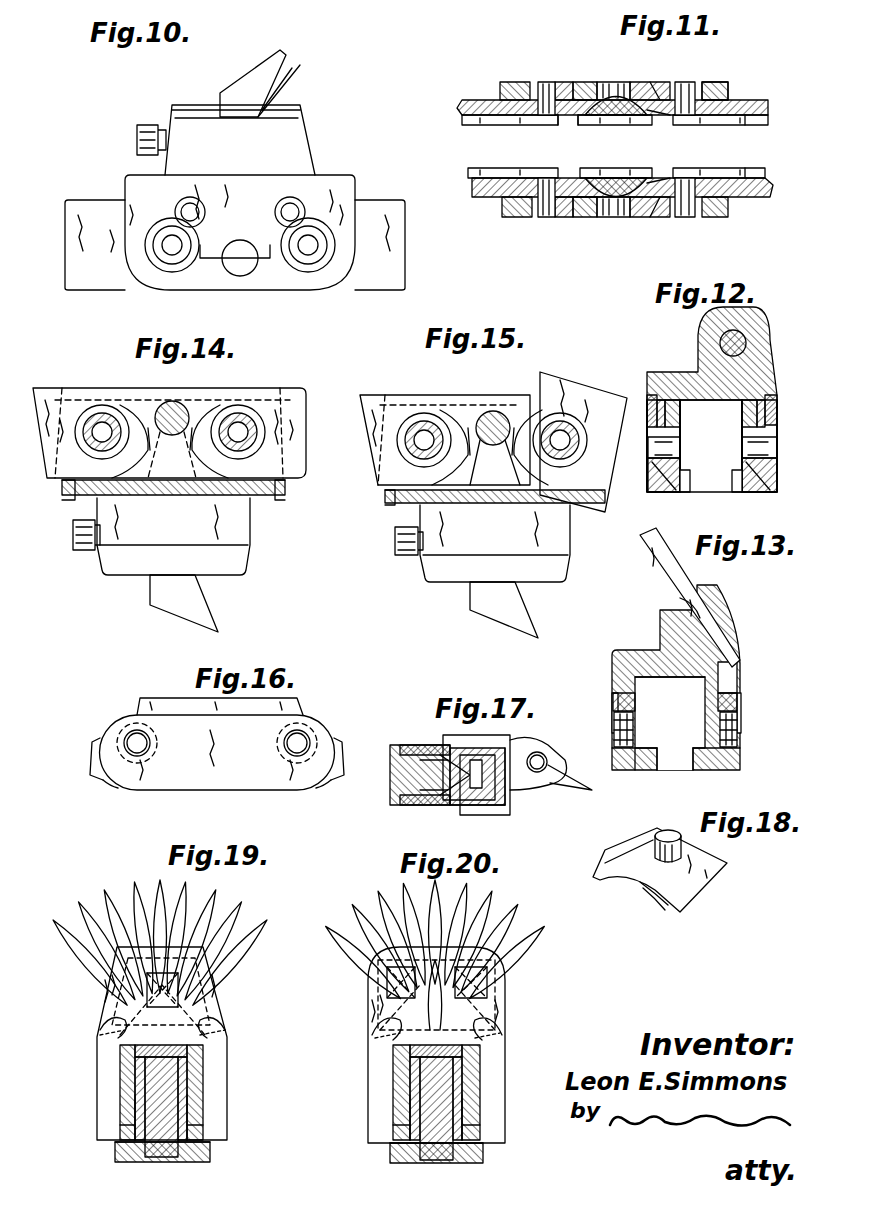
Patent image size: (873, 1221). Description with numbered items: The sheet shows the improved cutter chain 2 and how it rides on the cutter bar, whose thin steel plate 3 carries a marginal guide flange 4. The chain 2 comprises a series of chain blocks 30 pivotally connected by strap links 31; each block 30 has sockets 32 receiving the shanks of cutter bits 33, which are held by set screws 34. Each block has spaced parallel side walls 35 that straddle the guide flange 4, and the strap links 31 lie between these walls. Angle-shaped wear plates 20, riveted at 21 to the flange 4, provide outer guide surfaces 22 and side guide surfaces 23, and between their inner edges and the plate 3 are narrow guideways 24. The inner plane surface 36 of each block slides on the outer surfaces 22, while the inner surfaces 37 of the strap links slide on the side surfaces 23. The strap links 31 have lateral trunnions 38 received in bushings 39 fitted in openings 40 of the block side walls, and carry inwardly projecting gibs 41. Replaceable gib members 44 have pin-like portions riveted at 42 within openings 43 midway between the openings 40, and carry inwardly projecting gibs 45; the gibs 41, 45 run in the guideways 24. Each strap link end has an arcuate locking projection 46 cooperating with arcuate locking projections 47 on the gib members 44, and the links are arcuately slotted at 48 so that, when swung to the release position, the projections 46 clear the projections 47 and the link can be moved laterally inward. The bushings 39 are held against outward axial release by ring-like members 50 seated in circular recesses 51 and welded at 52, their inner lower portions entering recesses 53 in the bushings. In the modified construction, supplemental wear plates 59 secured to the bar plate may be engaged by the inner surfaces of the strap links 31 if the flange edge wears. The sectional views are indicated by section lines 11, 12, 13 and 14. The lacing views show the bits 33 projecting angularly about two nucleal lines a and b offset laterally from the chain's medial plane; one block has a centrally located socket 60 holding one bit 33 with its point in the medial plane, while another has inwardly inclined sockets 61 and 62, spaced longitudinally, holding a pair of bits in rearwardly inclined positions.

In FIG. 10, the cutter chain 2 is at (364, 171).
In FIG. 17, the cutter bar plate 3 is at (392, 770).
In FIG. 19, the cutter bar plate 3 is at (210, 1157).
In FIG. 20, the cutter bar plate 3 is at (483, 1157).
In FIG. 19, the guide flange 4 is at (180, 1087).
In FIG. 20, the guide flange 4 is at (450, 1087).
In FIG. 10, the hanger 11 is at (425, 245).
In FIG. 10, the longitudinal guideways 12 is at (180, 322).
In FIG. 10, the lateral guides 13 is at (232, 324).
In FIG. 11, the adjusting screw 14 is at (798, 100).
In FIG. 17, the wear plates 20 is at (470, 805).
In FIG. 19, the wear plates 20 is at (138, 1102).
In FIG. 20, the wear plates 20 is at (395, 1077).
In FIG. 17, the rivets 21 is at (445, 752).
In FIG. 17, the outer guide surfaces 22 is at (530, 747).
In FIG. 19, the outer guide surfaces 22 is at (210, 1022).
In FIG. 20, the outer guide surfaces 22 is at (490, 1027).
In FIG. 17, the side guide surfaces 23 is at (452, 805).
In FIG. 19, the side guide surfaces 23 is at (185, 1107).
In FIG. 20, the side guide surfaces 23 is at (465, 1107).
In FIG. 19, the guideways 24 is at (125, 1150).
In FIG. 20, the guideways 24 is at (400, 1149).
In FIG. 10, the chain blocks 30 is at (300, 125).
In FIG. 11, the chain blocks 30 is at (718, 84).
In FIG. 12, the chain blocks 30 is at (725, 351).
In FIG. 14, the chain blocks 30 is at (240, 535).
In FIG. 15, the chain blocks 30 is at (435, 565).
In FIG. 13, the chain blocks 30 is at (730, 610).
In FIG. 17, the chain blocks 30 is at (550, 787).
In FIG. 10, the strap links 31 is at (82, 200).
In FIG. 11, the strap links 31 is at (744, 100).
In FIG. 12, the strap links 31 is at (776, 372).
In FIG. 14, the strap links 31 is at (302, 410).
In FIG. 15, the strap links 31 is at (548, 395).
In FIG. 16, the strap links 31 is at (260, 786).
In FIG. 17, the strap links 31 is at (512, 812).
In FIG. 19, the strap links 31 is at (122, 1080).
In FIG. 20, the strap links 31 is at (412, 1097).
In FIG. 10, the sockets 32 is at (272, 85).
In FIG. 13, the sockets 32 is at (668, 610).
In FIG. 10, the cutter bits 33 is at (280, 50).
In FIG. 14, the cutter bits 33 is at (212, 600).
In FIG. 15, the cutter bits 33 is at (478, 598).
In FIG. 13, the cutter bits 33 is at (655, 574).
In FIG. 17, the cutter bits 33 is at (590, 794).
In FIG. 19, the cutter bits 33 is at (105, 897).
In FIG. 20, the cutter bits 33 is at (340, 937).
In FIG. 12, the set screws 34 is at (745, 340).
In FIG. 14, the set screws 34 is at (73, 540).
In FIG. 15, the set screws 34 is at (395, 540).
In FIG. 19, the set screws 34 is at (178, 992).
In FIG. 20, the set screws 34 is at (388, 987).
In FIG. 10, the side walls 35 is at (250, 290).
In FIG. 11, the side walls 35 is at (660, 87).
In FIG. 12, the side walls 35 is at (648, 494).
In FIG. 14, the side walls 35 is at (72, 440).
In FIG. 15, the side walls 35 is at (595, 500).
In FIG. 13, the side walls 35 is at (613, 692).
In FIG. 17, the side walls 35 is at (450, 812).
In FIG. 19, the side walls 35 is at (120, 1130).
In FIG. 20, the side walls 35 is at (395, 1122).
In FIG. 12, the inner plane surface 36 is at (732, 403).
In FIG. 14, the inner plane surface 36 is at (68, 498).
In FIG. 15, the inner plane surface 36 is at (385, 500).
In FIG. 13, the inner plane surface 36 is at (695, 678).
In FIG. 17, the inner plane surface 36 is at (510, 792).
In FIG. 19, the inner plane surface 36 is at (120, 1057).
In FIG. 20, the inner plane surface 36 is at (395, 1052).
In FIG. 11, the inner surfaces 37 is at (745, 125).
In FIG. 12, the inner surfaces 37 is at (742, 449).
In FIG. 10, the lateral trunnions 38 is at (182, 255).
In FIG. 11, the lateral trunnions 38 is at (528, 82).
In FIG. 12, the lateral trunnions 38 is at (652, 464).
In FIG. 14, the lateral trunnions 38 is at (88, 415).
In FIG. 15, the lateral trunnions 38 is at (405, 448).
In FIG. 16, the lateral trunnions 38 is at (155, 757).
In FIG. 10, the bushings 39 is at (150, 235).
In FIG. 11, the bushings 39 is at (560, 82).
In FIG. 12, the bushings 39 is at (650, 494).
In FIG. 14, the bushings 39 is at (80, 418).
In FIG. 15, the bushings 39 is at (412, 418).
In FIG. 11, the openings 40 is at (515, 82).
In FIG. 11, the gibs 41 is at (555, 125).
In FIG. 12, the gibs 41 is at (732, 487).
In FIG. 14, the gibs 41 is at (60, 400).
In FIG. 15, the gibs 41 is at (380, 405).
In FIG. 16, the gibs 41 is at (158, 705).
In FIG. 17, the gibs 41 is at (420, 777).
In FIG. 10, the riveting 42 is at (245, 242).
In FIG. 11, the riveting 42 is at (620, 84).
In FIG. 13, the riveting 42 is at (618, 734).
In FIG. 11, the openings 43 is at (597, 85).
In FIG. 13, the openings 43 is at (635, 770).
In FIG. 11, the replaceable gib members 44 is at (618, 117).
In FIG. 14, the replaceable gib members 44 is at (170, 400).
In FIG. 15, the replaceable gib members 44 is at (492, 495).
In FIG. 13, the replaceable gib members 44 is at (622, 702).
In FIG. 18, the replaceable gib members 44 is at (655, 847).
In FIG. 11, the gibs 45 is at (635, 120).
In FIG. 14, the gibs 45 is at (184, 400).
In FIG. 15, the gibs 45 is at (490, 410).
In FIG. 13, the gibs 45 is at (697, 757).
In FIG. 18, the gibs 45 is at (598, 882).
In FIG. 11, the arcuate locking projection 46 is at (580, 117).
In FIG. 14, the arcuate locking projection 46 is at (168, 495).
In FIG. 15, the arcuate locking projection 46 is at (470, 495).
In FIG. 16, the arcuate locking projection 46 is at (98, 777).
In FIG. 11, the arcuate locking projections 47 is at (655, 114).
In FIG. 14, the arcuate locking projections 47 is at (150, 425).
In FIG. 15, the arcuate locking projections 47 is at (500, 425).
In FIG. 18, the arcuate locking projections 47 is at (648, 895).
In FIG. 14, the arcuate slot 48 is at (125, 408).
In FIG. 15, the arcuate slot 48 is at (445, 410).
In FIG. 16, the arcuate slot 48 is at (110, 724).
In FIG. 10, the ring-like members 50 is at (180, 205).
In FIG. 12, the ring-like members 50 is at (647, 400).
In FIG. 12, the circular recesses 51 is at (668, 380).
In FIG. 10, the welding 52 is at (192, 205).
In FIG. 12, the welding 52 is at (652, 427).
In FIG. 12, the recesses 53 is at (652, 450).
In FIG. 17, the supplemental wear plates 59 is at (410, 748).
In FIG. 19, the centrally located socket 60 is at (97, 1014).
In FIG. 20, the inwardly inclined socket 61 is at (370, 977).
In FIG. 20, the inwardly inclined socket 62 is at (505, 972).
In FIG. 19, the nucleal line a is at (98, 1039).
In FIG. 20, the nucleal line a is at (375, 1040).
In FIG. 19, the nucleal line b is at (220, 1037).
In FIG. 20, the nucleal line b is at (500, 1040).